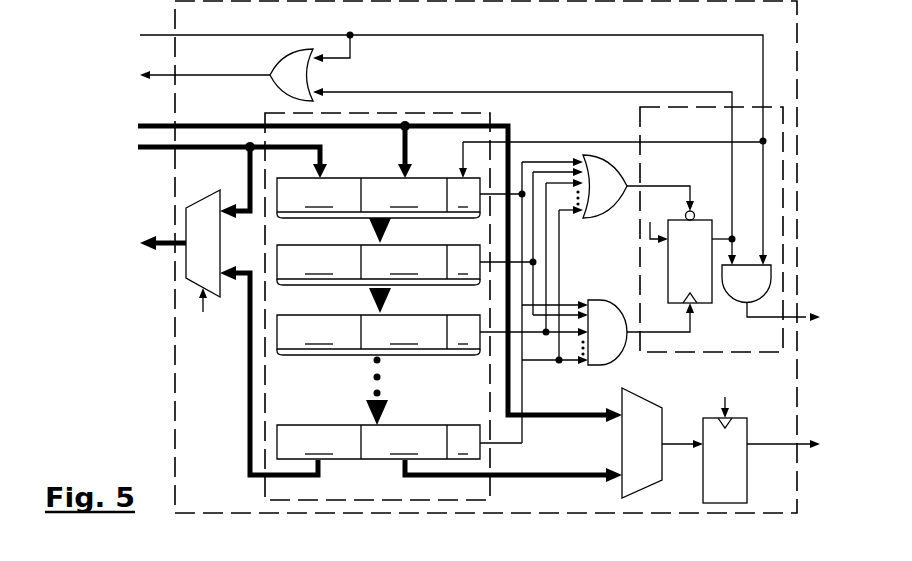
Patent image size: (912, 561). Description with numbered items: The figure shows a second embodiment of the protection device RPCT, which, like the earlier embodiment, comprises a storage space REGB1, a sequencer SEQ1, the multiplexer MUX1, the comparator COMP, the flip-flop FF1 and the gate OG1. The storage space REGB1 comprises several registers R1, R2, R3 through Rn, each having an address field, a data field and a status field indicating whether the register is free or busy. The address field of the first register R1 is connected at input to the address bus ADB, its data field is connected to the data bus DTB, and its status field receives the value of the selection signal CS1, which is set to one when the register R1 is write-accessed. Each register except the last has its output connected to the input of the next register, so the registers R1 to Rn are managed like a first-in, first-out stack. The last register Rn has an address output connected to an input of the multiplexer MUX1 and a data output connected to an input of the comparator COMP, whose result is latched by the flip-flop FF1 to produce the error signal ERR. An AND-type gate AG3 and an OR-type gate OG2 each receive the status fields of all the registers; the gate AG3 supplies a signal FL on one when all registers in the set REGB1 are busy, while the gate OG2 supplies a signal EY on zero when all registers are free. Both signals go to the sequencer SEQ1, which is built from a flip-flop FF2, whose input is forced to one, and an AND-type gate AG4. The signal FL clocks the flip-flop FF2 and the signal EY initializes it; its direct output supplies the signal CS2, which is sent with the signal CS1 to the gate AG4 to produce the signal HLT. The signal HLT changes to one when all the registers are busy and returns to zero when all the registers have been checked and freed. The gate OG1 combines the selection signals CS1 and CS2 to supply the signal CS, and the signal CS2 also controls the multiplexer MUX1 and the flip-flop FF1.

The protection device RPCT is at (513, 26).
The storage space REGB1 is at (400, 497).
The sequencer SEQ1 is at (705, 137).
The selection signal CS1 is at (433, 145).
The signal CS2 is at (465, 244).
The signal CS is at (191, 75).
The gate OG1 is at (277, 70).
The OR-type logic gate OG2 is at (592, 216).
The AND-type logic gate AG3 is at (614, 357).
The AND-type logic gate AG4 is at (736, 292).
The flip-flop FF1 is at (739, 466).
The flip-flop FF2 is at (704, 266).
The multiplexer MUX1 is at (192, 275).
The comparator COMP is at (630, 410).
The first register R1 is at (355, 178).
The next register R2 is at (280, 253).
The register R3 is at (288, 349).
The last register Rn is at (287, 425).
The data bus DTB is at (158, 124).
The address bus ADB is at (161, 150).
The signal EY is at (660, 189).
The signal FL is at (660, 318).
The signal HLT is at (843, 318).
The error signal ERR is at (844, 446).